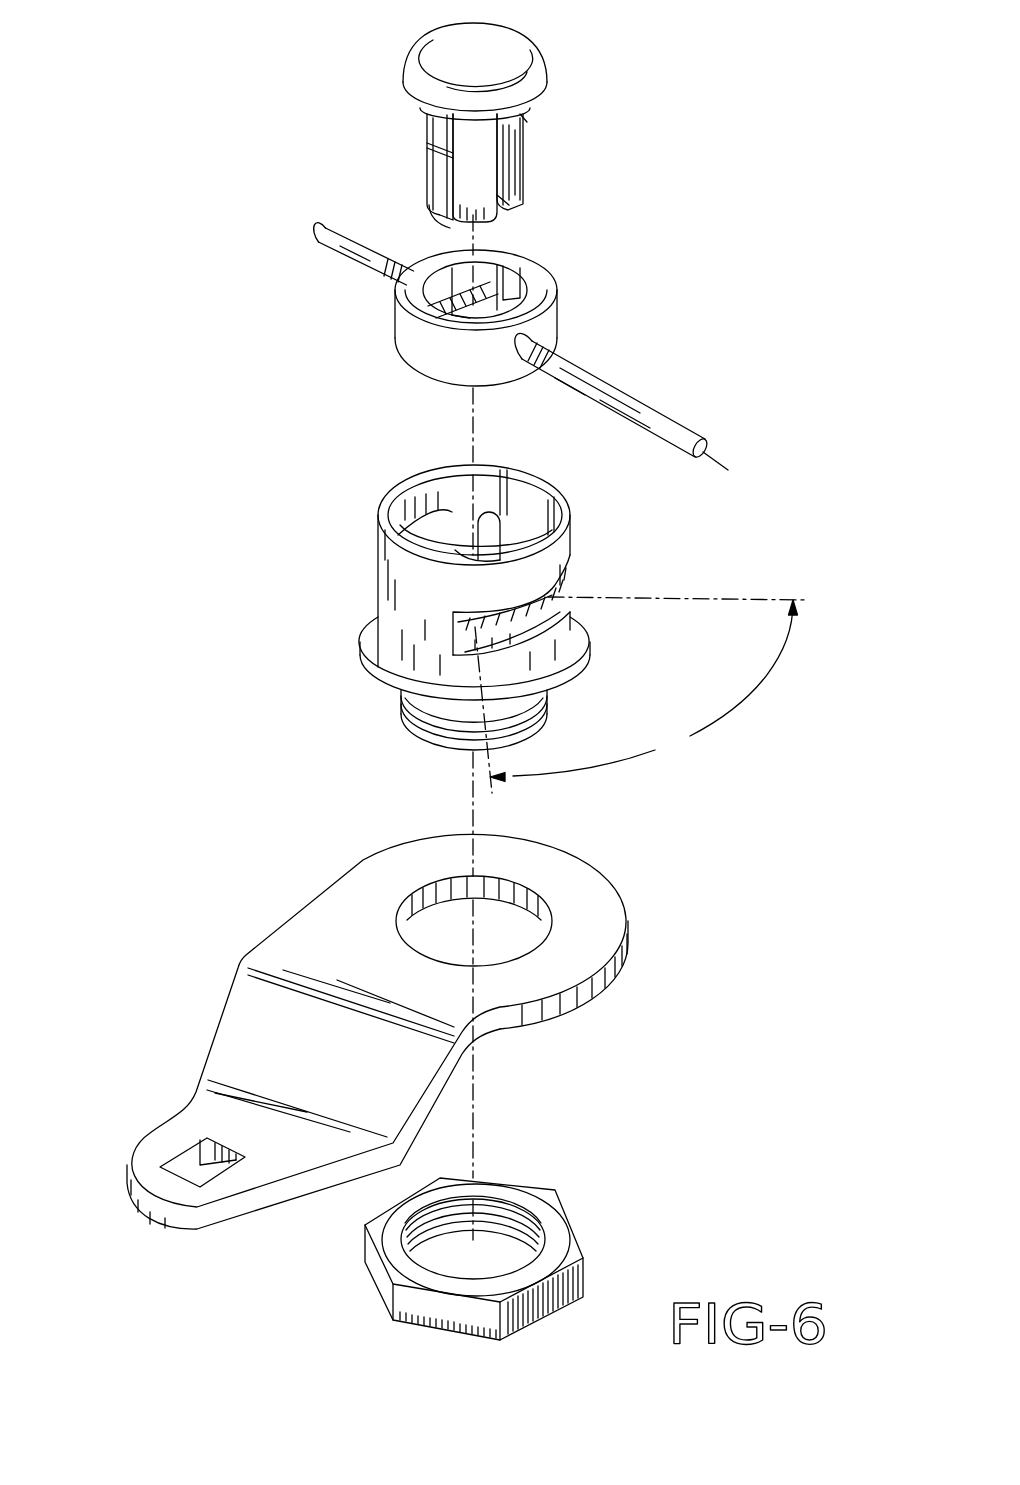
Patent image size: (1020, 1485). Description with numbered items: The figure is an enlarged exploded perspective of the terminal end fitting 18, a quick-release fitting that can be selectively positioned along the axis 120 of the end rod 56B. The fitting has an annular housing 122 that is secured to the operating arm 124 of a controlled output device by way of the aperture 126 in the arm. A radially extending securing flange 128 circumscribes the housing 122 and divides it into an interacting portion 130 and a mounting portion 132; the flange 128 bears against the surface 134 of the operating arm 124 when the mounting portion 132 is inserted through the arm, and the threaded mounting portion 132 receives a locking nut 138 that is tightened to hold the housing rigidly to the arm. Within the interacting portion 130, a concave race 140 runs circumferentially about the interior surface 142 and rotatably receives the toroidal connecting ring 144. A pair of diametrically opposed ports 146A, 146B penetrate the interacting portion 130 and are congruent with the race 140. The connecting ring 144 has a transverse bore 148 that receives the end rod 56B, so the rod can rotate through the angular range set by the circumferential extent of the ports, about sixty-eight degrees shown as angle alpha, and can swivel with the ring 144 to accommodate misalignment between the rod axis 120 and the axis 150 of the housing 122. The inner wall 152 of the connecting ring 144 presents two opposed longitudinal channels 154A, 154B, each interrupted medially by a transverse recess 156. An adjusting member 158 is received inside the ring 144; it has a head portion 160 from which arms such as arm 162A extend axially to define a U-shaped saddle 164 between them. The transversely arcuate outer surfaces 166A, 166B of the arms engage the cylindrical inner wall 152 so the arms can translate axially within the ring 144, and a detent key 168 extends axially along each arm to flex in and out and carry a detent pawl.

The terminal end fitting 18 is at (143, 268).
The end rod 56B is at (631, 386).
The axis of the end rod 120 is at (715, 458).
The housing 122 is at (450, 602).
The operating arm 124 is at (426, 1031).
The aperture 126 is at (494, 932).
The securing flange 128 is at (374, 668).
The interacting portion 130 is at (385, 576).
The mounting portion 132 is at (415, 731).
The surface 134 is at (588, 950).
The locking nut 138 is at (532, 1208).
The concave race 140 is at (517, 550).
The interior surface 142 is at (422, 498).
The toroidal connecting ring 144 is at (502, 328).
The port 146A is at (525, 650).
The port 146B is at (455, 537).
The transverse bore 148 is at (547, 350).
The axis of the annular housing 150 is at (473, 420).
The inner wall 152 is at (467, 270).
The channel 154A is at (413, 252).
The channel 154B is at (516, 270).
The transverse recess 156 is at (517, 300).
The adjusting member 158 is at (494, 124).
The head portion 160 is at (465, 47).
The arm 162A is at (447, 232).
The U-shaped saddle 164 is at (507, 135).
The outer surface 166A is at (472, 150).
The outer surface 166B is at (522, 163).
The detent key 168 is at (443, 180).